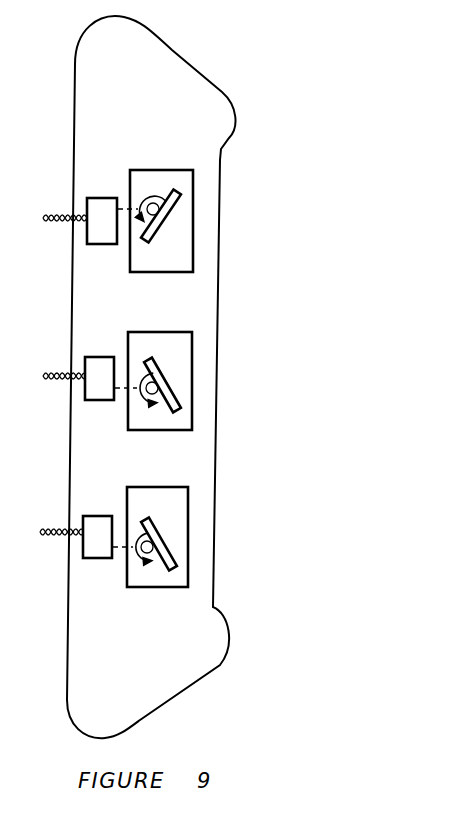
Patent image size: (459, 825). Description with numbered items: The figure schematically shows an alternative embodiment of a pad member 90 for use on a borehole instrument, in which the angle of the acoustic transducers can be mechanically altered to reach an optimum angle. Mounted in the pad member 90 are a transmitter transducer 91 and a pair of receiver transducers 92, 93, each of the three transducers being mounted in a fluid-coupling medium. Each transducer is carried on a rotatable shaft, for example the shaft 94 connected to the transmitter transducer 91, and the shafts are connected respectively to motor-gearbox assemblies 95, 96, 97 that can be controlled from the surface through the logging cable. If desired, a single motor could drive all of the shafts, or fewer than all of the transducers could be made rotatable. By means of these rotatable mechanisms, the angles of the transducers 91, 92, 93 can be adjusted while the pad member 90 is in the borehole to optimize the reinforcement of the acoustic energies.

The pad member 90 is at (183, 56).
The transmitter transducer 91 is at (200, 197).
The receiver transducer 92 is at (158, 378).
The receiver transducer 93 is at (155, 522).
The shaft 94 is at (157, 197).
The motor-gearbox assembly 95 is at (105, 197).
The motor-gearbox assembly 96 is at (104, 357).
The motor-gearbox assembly 97 is at (102, 516).